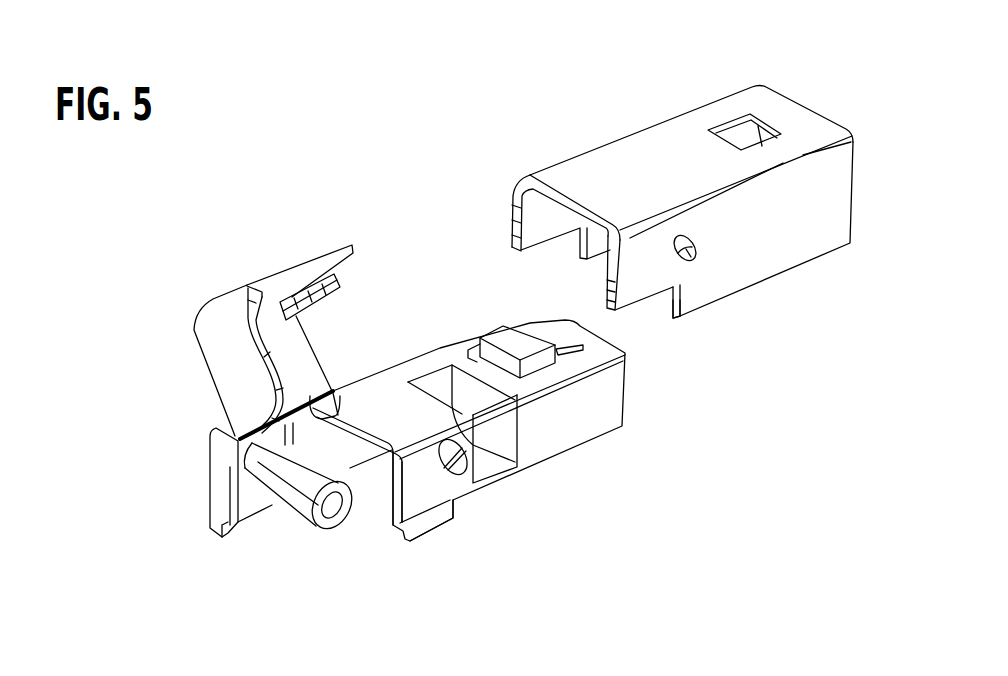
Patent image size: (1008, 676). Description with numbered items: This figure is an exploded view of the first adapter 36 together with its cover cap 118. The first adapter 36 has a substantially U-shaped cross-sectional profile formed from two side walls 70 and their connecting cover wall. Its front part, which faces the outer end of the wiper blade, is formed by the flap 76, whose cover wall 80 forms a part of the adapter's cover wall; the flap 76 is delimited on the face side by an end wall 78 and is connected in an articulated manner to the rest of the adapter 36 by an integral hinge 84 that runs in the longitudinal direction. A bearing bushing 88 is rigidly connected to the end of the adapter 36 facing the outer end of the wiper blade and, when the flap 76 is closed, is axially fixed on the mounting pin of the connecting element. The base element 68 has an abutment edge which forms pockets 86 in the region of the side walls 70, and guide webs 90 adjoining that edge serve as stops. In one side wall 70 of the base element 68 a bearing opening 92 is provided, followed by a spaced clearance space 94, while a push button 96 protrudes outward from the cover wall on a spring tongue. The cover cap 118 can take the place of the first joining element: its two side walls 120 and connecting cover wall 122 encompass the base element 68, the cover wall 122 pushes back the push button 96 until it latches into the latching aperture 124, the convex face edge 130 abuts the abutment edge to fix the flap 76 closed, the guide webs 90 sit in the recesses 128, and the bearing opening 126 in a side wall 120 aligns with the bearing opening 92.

The first adapter 36 is at (357, 191).
The base element 68 is at (205, 451).
The side wall 70 is at (330, 447).
The flap 76 is at (262, 266).
The end wall 78 is at (225, 365).
The cover wall of the flap 80 is at (292, 345).
The integral hinge 84 is at (340, 412).
The pocket 86 is at (330, 296).
The bearing bushing 88 is at (289, 492).
The guide web 90 is at (433, 520).
The bearing opening 92 is at (466, 438).
The clearance space 94 is at (500, 430).
The push button 96 is at (518, 342).
The cover cap 118 is at (647, 117).
The side wall of the cover cap 120 is at (535, 224).
The cover wall of the cover cap 122 is at (638, 173).
The latching aperture 124 is at (738, 132).
The bearing opening of the cover cap 126 is at (698, 253).
The recess 128 is at (648, 307).
The face edge 130 is at (535, 196).